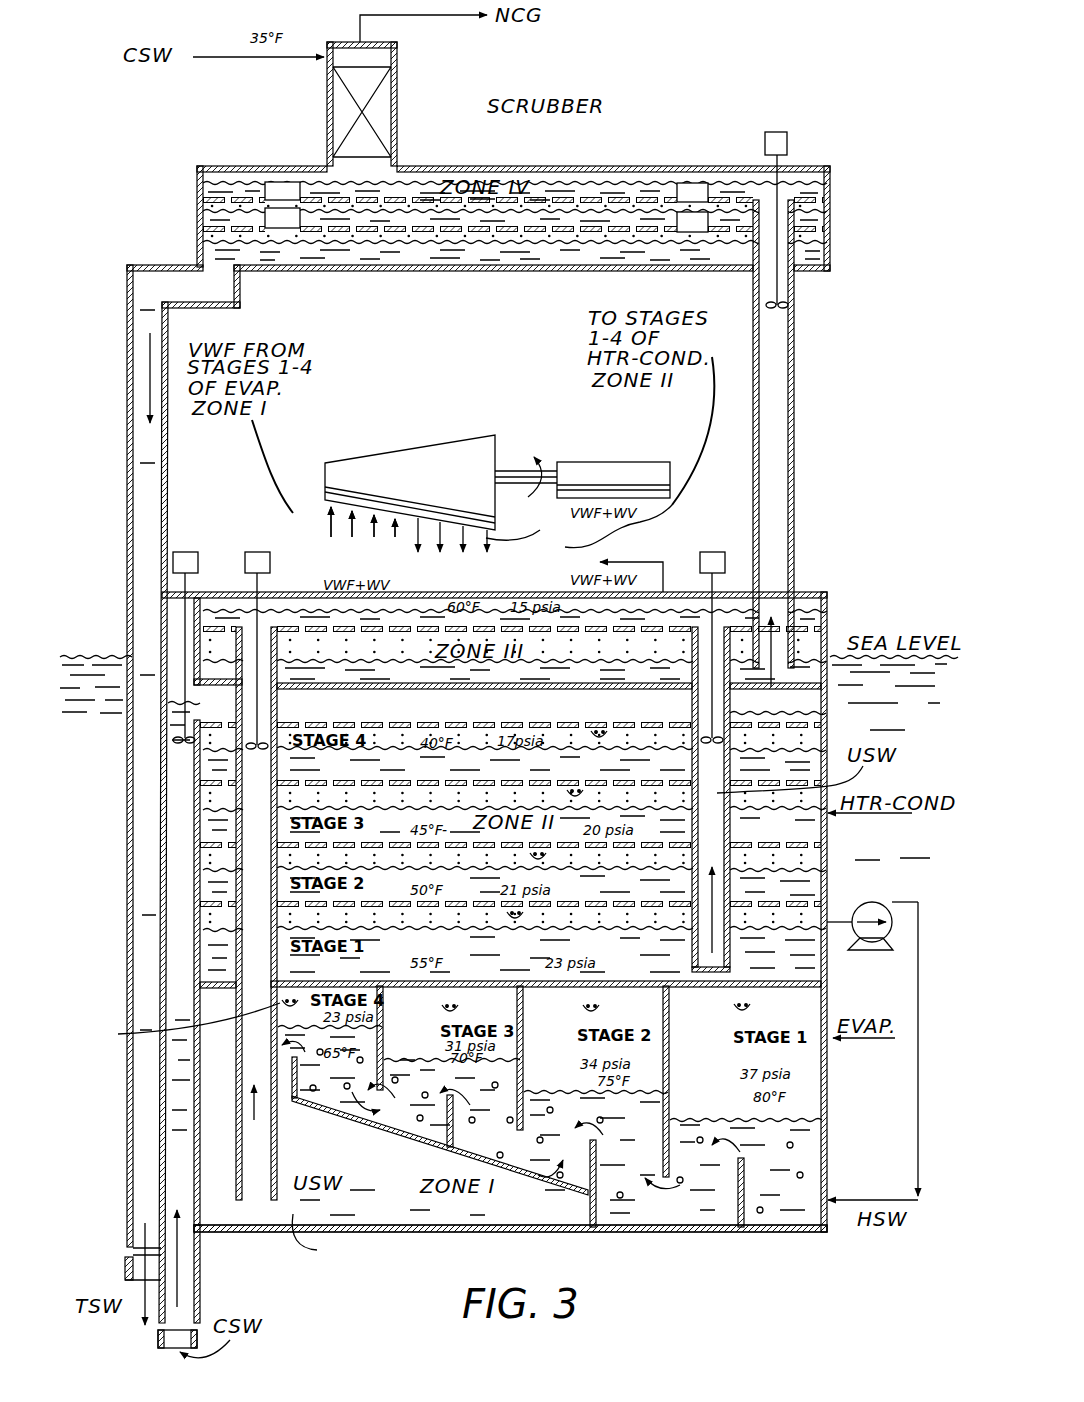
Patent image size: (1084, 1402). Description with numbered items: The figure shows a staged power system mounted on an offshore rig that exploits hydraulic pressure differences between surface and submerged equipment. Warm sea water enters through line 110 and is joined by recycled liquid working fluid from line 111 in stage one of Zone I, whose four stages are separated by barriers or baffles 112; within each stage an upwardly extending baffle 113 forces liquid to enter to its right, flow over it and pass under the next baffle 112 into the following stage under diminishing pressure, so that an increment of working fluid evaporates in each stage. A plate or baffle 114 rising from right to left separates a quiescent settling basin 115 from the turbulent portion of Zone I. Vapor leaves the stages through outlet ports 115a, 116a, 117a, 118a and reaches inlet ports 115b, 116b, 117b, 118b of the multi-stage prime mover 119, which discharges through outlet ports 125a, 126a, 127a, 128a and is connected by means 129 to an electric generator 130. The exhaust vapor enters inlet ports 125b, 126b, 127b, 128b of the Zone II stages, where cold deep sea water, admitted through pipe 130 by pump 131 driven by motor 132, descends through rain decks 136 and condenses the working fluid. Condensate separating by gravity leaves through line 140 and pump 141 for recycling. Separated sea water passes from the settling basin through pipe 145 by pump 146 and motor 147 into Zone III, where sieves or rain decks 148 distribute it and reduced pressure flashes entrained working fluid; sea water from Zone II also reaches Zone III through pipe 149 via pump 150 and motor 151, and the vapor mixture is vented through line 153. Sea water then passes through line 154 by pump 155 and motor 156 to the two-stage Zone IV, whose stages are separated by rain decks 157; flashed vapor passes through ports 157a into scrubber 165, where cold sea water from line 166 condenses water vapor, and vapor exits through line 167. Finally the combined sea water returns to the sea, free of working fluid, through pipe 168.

The line 110 is at (850, 1199).
The line 111 is at (918, 1060).
The barrier or baffle 112 is at (383, 1038).
The upwardly extending baffle 113 is at (298, 1068).
The plate or baffle 114 is at (420, 1137).
The settling basin 115 is at (398, 1216).
The outlet port 115a is at (740, 1011).
The outlet port 116a is at (588, 1011).
The outlet port 117a is at (445, 1011).
The outlet port 118a is at (307, 1015).
The inlet port 115b is at (331, 518).
The inlet port 116b is at (352, 538).
The inlet port 117b is at (373, 538).
The inlet port 118b is at (394, 537).
The multi-stage prime mover 119 is at (390, 453).
The outlet port 125a is at (418, 545).
The outlet port 126a is at (442, 548).
The outlet port 127a is at (466, 552).
The outlet port 128a is at (489, 536).
The inlet port 125b is at (524, 916).
The inlet port 126b is at (546, 856).
The inlet port 127b is at (583, 795).
The inlet port 128b is at (605, 736).
The connecting means 129 is at (514, 470).
The electric generator / cold sea water pipe 130 is at (627, 462).
The pump 131 is at (173, 740).
The motor 132 is at (198, 557).
The rain deck 136 is at (525, 701).
The line 140 is at (850, 912).
The pump 141 is at (865, 951).
The pipe 145 is at (277, 1173).
The pump 146 is at (261, 752).
The motor 147 is at (270, 572).
The sieves or rain decks 148 is at (821, 612).
The pipe 149 is at (733, 817).
The pump 150 is at (762, 700).
The motor 151 is at (717, 552).
The line 153 is at (661, 531).
The line 154 is at (795, 437).
The pump 155 is at (792, 305).
The motor 156 is at (787, 140).
The rain deck 157 is at (817, 200).
The port 157a is at (262, 182).
The scrubber 165 is at (397, 100).
The line 166 is at (240, 58).
The line 167 is at (402, 17).
The pipe 168 is at (128, 913).